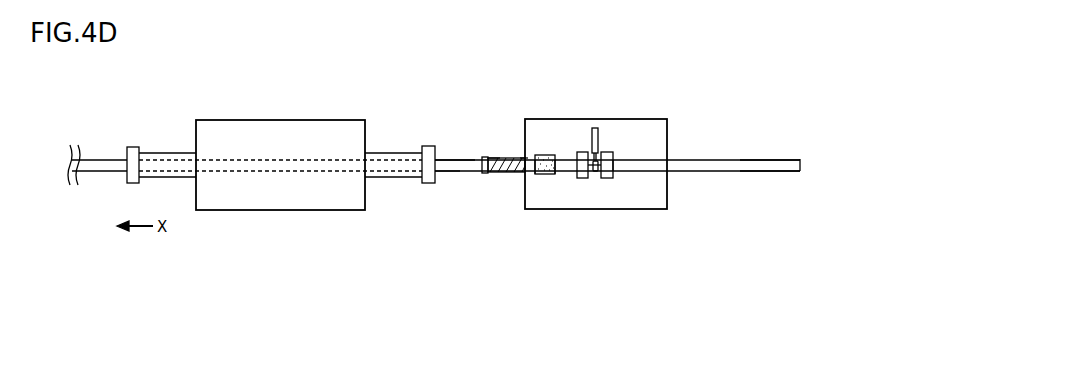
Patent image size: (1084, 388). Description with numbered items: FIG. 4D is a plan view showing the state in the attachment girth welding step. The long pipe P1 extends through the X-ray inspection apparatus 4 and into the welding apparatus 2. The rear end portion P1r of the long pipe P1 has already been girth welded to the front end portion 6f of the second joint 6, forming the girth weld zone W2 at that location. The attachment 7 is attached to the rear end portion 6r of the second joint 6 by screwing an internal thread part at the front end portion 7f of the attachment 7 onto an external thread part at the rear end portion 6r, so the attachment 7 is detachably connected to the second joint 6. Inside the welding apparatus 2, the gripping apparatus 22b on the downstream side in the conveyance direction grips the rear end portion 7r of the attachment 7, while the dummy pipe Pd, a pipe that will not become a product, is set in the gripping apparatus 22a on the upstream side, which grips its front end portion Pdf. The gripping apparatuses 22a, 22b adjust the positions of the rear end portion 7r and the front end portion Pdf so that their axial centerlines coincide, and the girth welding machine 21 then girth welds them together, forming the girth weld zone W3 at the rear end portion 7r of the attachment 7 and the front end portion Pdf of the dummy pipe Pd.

The X-ray inspection apparatus 4 is at (287, 103).
The welding apparatus 2 is at (541, 97).
The long pipe P1 is at (447, 174).
The rear end portion of the long pipe P1r is at (474, 158).
The girth weld zone W2 is at (483, 155).
The second joint 6 is at (512, 174).
The front end portion of the second joint 6f is at (497, 157).
The rear end portion of the second joint 6r is at (532, 157).
The attachment 7 is at (547, 175).
The front end portion of the attachment 7f is at (535, 175).
The rear end portion of the attachment 7r is at (583, 178).
The gripping apparatus 22b is at (578, 152).
The girth welding machine 21 is at (596, 128).
The gripping apparatus 22a is at (612, 152).
The girth weld zone W3 is at (592, 178).
The front end portion of the dummy pipe Pdf is at (607, 178).
The dummy pipe Pd is at (740, 171).